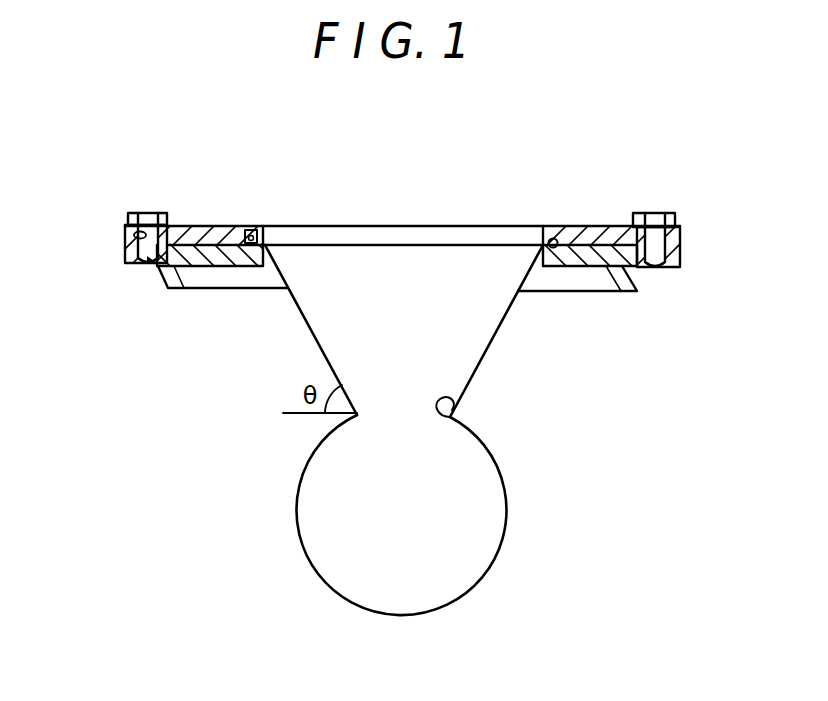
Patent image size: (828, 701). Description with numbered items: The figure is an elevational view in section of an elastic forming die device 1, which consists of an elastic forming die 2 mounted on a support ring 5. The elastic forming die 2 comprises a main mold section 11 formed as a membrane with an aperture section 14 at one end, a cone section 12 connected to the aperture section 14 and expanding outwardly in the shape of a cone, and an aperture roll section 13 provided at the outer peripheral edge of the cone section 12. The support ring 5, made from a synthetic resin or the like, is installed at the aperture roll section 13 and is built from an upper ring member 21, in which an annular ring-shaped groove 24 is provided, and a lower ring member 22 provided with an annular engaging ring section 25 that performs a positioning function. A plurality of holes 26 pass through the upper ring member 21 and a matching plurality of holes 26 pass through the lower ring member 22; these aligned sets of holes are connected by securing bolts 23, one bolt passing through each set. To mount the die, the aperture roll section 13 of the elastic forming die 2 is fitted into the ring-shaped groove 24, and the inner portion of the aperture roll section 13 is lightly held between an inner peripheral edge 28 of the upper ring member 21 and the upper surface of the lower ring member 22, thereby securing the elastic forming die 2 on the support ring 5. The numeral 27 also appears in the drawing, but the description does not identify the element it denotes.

The elastic forming die device 1 is at (386, 143).
The elastic forming die 2 is at (312, 356).
The support ring 5 is at (200, 222).
The main mold section 11 is at (507, 518).
The cone section 12 is at (487, 352).
The aperture roll section 13 is at (557, 239).
The aperture section 14 is at (455, 401).
The upper ring member 21 is at (228, 236).
The lower ring member 22 is at (210, 267).
The securing bolt 23 is at (146, 212).
The ring-shaped groove 24 is at (254, 237).
The engaging ring section 25 is at (176, 287).
The hole 26 is at (134, 236).
The seal 27 is at (150, 262).
The inner peripheral edge 28 is at (266, 241).